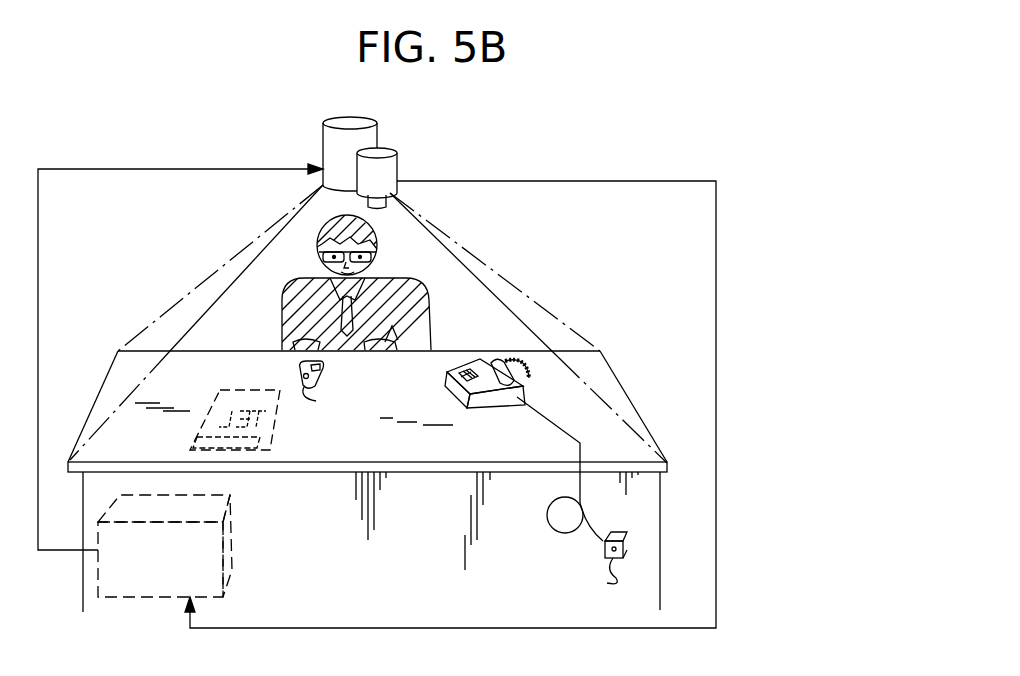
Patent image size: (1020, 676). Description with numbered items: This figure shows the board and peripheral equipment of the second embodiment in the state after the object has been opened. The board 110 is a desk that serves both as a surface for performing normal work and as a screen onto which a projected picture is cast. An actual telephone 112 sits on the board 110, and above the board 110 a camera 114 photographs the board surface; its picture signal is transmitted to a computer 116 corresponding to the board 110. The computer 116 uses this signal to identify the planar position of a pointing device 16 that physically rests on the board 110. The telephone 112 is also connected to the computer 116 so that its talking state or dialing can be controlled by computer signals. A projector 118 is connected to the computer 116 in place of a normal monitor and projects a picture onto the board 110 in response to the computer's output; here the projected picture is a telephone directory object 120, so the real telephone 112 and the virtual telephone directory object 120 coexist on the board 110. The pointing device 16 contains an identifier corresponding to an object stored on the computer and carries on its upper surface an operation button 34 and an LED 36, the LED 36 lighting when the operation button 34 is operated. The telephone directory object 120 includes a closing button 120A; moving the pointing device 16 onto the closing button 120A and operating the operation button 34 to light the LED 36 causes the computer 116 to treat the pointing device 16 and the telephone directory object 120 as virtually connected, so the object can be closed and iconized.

The board 110 is at (603, 380).
The telephone 112 is at (497, 403).
The camera 114 is at (365, 168).
The computer 116 is at (172, 593).
The projector 118 is at (340, 124).
The telephone directory object 120 is at (277, 418).
The closing button 120A is at (252, 452).
The pointing device 16 is at (321, 388).
The operation button 34 is at (300, 367).
The LED 36 is at (327, 404).